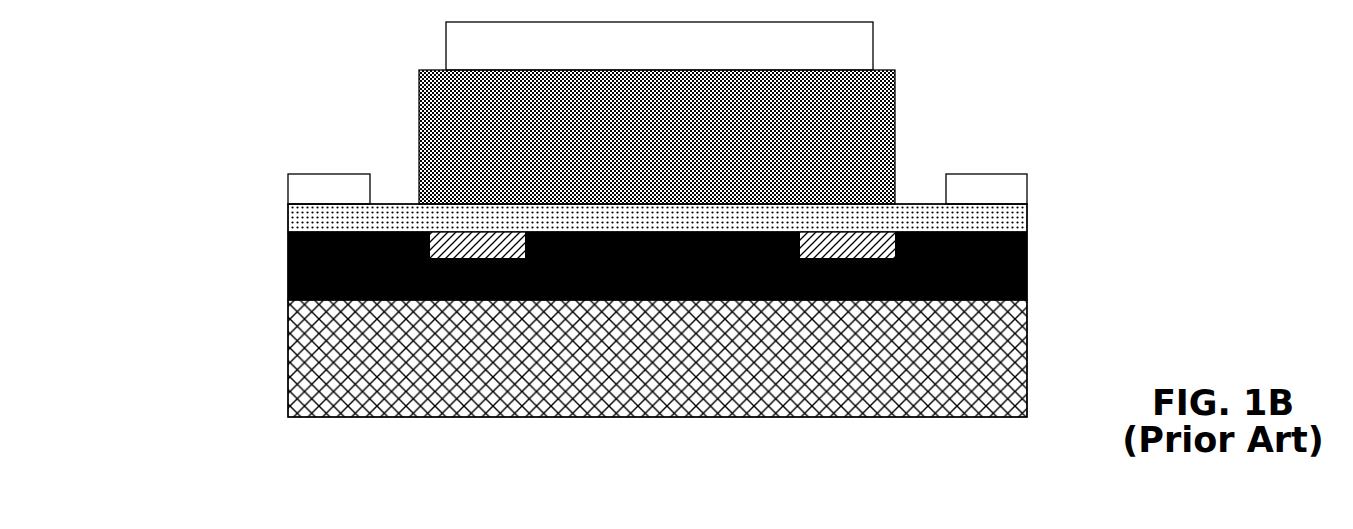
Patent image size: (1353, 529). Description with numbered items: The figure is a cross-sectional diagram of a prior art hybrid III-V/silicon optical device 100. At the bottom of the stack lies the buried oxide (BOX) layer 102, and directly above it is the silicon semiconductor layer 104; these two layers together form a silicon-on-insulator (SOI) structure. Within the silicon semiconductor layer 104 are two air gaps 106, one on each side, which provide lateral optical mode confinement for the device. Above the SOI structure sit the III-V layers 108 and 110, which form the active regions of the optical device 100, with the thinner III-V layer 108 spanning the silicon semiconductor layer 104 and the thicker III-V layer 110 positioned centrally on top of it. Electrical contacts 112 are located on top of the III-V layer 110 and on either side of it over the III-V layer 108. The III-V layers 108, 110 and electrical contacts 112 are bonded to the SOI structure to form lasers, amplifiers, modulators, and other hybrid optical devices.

The optical device 100 is at (782, 451).
The buried oxide (BOX) layer 102 is at (657, 358).
The silicon semiconductor layer 104 is at (657, 266).
The air gaps 106 is at (662, 245).
The III-V layer 108 is at (657, 218).
The III-V layer 110 is at (657, 137).
The electrical contacts 112 is at (657, 113).